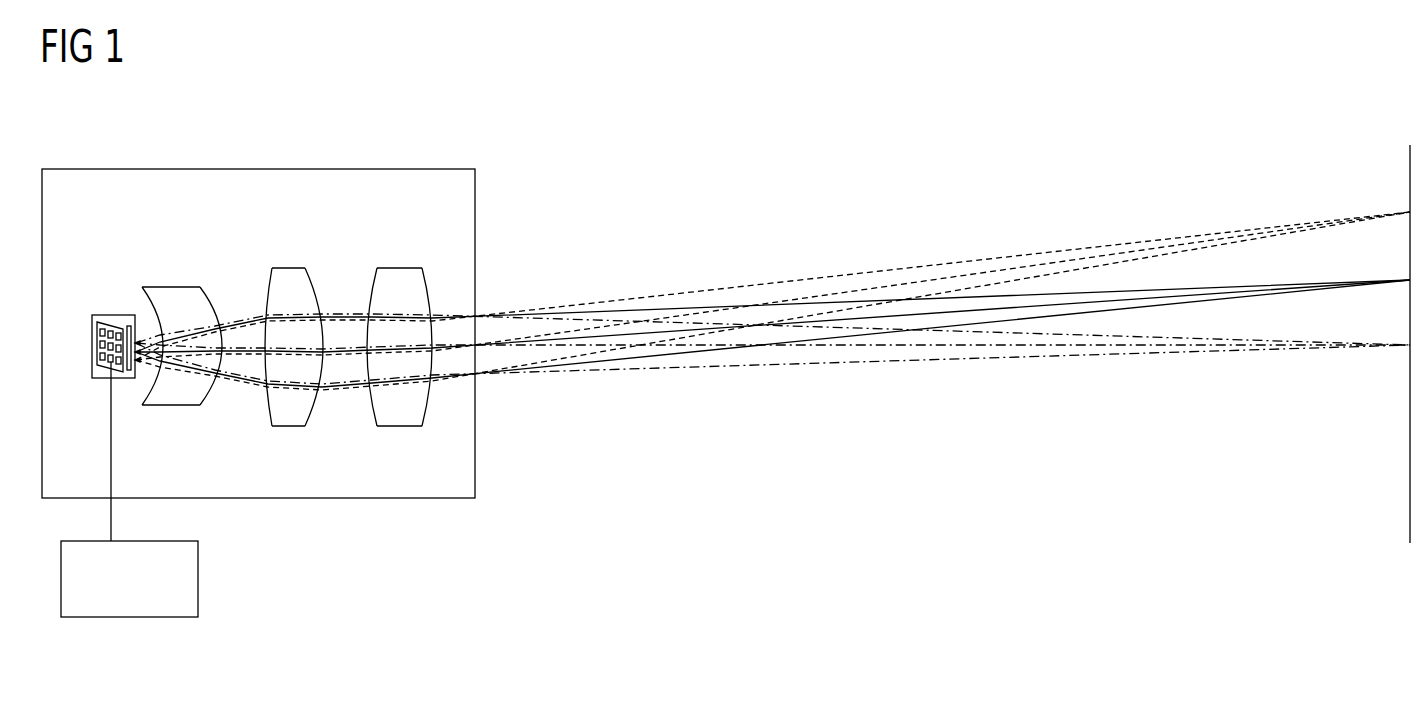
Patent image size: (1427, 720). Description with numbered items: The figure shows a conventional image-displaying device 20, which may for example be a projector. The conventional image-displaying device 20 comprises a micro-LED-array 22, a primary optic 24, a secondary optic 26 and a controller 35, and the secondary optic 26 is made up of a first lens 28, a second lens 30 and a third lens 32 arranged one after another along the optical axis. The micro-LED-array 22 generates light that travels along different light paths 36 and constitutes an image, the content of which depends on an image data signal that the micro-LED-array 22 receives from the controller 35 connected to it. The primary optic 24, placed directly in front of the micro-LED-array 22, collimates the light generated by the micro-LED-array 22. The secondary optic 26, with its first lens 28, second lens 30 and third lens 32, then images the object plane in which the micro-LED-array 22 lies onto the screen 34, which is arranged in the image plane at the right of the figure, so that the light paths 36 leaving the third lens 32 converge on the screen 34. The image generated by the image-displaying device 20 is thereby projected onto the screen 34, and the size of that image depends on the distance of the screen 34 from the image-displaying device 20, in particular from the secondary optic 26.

The conventional image-displaying device 20 is at (1182, 80).
The micro-LED-array 22 is at (116, 298).
The primary optic 24 is at (116, 298).
The secondary optic 26 is at (287, 340).
The first lens 28 is at (182, 287).
The second lens 30 is at (287, 266).
The third lens 32 is at (397, 266).
The screen 34 is at (1410, 441).
The controller 35 is at (132, 617).
The light path 36 is at (790, 255).